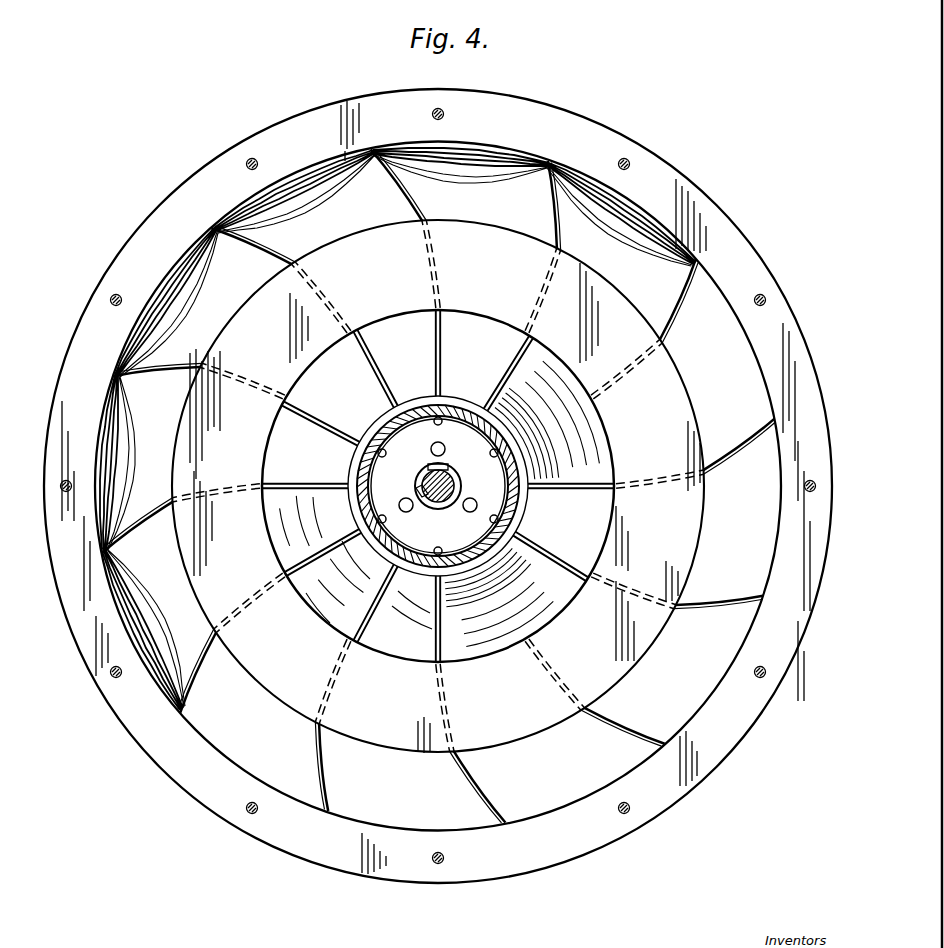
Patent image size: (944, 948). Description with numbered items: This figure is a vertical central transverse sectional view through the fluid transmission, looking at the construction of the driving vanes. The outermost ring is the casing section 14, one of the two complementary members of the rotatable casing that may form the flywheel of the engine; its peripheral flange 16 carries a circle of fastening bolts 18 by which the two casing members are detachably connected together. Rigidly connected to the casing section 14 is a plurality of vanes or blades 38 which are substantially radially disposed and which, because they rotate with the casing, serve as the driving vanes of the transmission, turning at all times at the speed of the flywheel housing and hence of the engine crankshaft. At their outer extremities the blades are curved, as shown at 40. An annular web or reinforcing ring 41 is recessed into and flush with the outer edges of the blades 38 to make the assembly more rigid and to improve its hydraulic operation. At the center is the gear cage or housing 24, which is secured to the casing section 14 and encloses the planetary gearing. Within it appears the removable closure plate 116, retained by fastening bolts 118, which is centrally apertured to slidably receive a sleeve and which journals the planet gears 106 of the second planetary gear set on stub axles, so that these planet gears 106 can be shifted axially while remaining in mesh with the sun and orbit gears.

The casing section 14 is at (692, 702).
The peripheral flange 16 is at (580, 840).
The fastening bolt 18 is at (437, 862).
The gear cage or housing 24 is at (461, 412).
The driving vane 38 is at (440, 623).
The curved outer extremity of vane 40 is at (470, 784).
The annular web or reinforcing ring 41 is at (608, 302).
The planet gear 106 is at (412, 503).
The removable closure plate 116 is at (478, 441).
The fastening bolt 118 is at (492, 460).